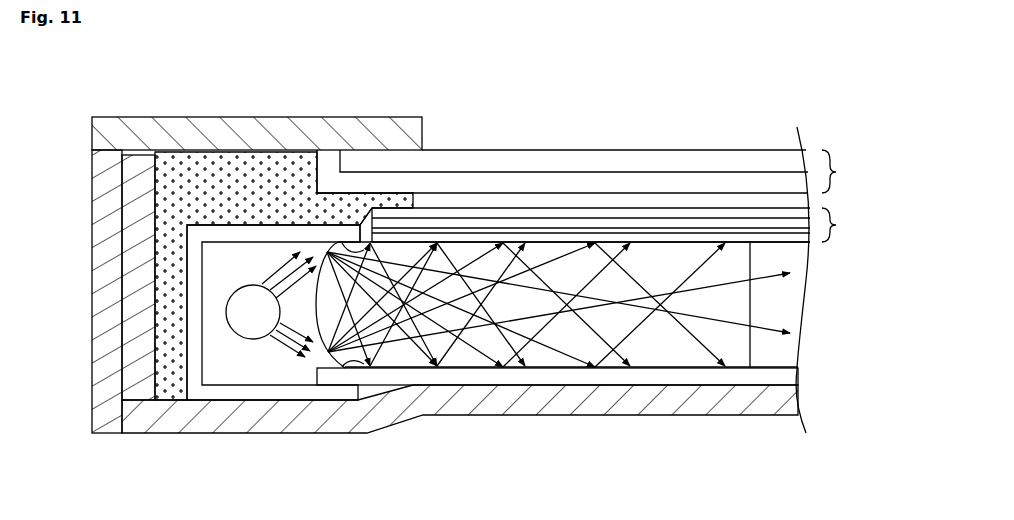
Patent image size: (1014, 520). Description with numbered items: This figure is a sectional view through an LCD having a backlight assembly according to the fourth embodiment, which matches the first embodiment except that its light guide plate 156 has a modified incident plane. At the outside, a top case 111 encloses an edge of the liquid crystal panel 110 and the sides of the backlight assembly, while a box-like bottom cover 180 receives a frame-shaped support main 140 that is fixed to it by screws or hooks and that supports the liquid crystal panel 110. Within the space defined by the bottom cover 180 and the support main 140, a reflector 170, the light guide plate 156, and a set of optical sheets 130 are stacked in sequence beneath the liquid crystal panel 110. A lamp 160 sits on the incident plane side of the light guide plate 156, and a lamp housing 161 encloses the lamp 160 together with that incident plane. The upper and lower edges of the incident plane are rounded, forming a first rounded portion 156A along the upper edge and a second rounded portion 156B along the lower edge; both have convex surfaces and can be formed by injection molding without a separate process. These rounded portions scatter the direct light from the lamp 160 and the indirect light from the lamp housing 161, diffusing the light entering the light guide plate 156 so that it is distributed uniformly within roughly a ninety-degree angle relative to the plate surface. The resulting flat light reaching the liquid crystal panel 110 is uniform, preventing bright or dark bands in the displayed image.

The liquid crystal panel 110 is at (592, 171).
The top case 111 is at (108, 312).
The optical sheets 130 is at (612, 225).
The support main 140 is at (172, 388).
The light guide plate 156 is at (788, 308).
The first rounded portion 156A is at (368, 248).
The second rounded portion 156B is at (350, 364).
The lamp 160 is at (245, 298).
The lamp housing 161 is at (360, 392).
The reflector 170 is at (788, 377).
The bottom cover 180 is at (555, 405).